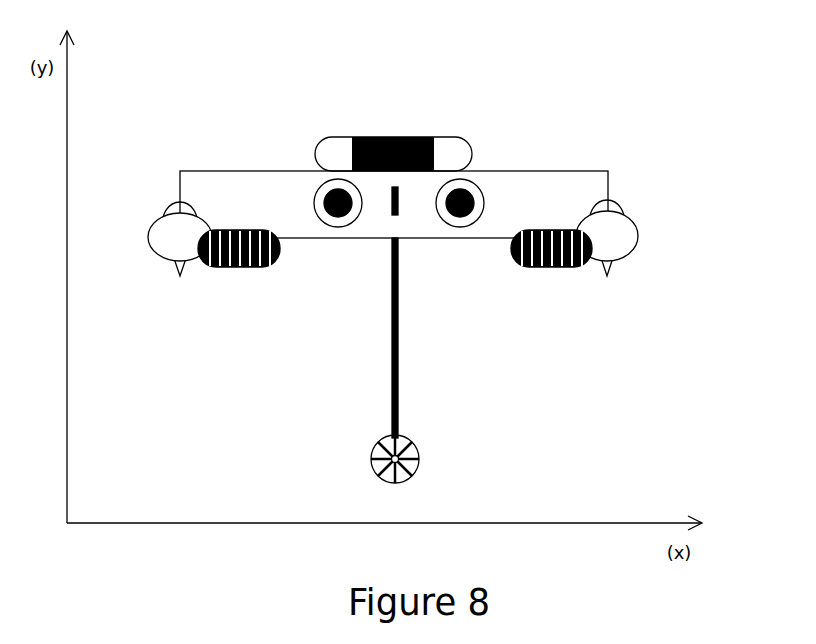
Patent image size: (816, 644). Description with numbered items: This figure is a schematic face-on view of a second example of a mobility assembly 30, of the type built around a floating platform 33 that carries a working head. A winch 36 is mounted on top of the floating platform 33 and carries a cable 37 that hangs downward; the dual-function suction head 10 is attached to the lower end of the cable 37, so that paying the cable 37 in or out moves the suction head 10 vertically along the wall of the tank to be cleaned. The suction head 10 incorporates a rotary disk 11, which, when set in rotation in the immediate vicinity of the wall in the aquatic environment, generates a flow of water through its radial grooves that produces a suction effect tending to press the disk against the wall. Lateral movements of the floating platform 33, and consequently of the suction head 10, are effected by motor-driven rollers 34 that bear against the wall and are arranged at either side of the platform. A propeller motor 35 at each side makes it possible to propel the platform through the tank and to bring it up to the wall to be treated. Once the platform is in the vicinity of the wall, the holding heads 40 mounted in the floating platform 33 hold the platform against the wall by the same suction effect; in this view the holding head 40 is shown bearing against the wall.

The dual-function suction head 10 is at (368, 438).
The rotary disk 11 is at (408, 470).
The mobility assembly 30 is at (512, 143).
The floating platform 33 is at (229, 183).
The motor-driven rollers 34 is at (248, 266).
The propeller motor 35 is at (168, 230).
The winch 36 is at (335, 150).
The cable 37 is at (398, 395).
The holding head 40 is at (340, 213).